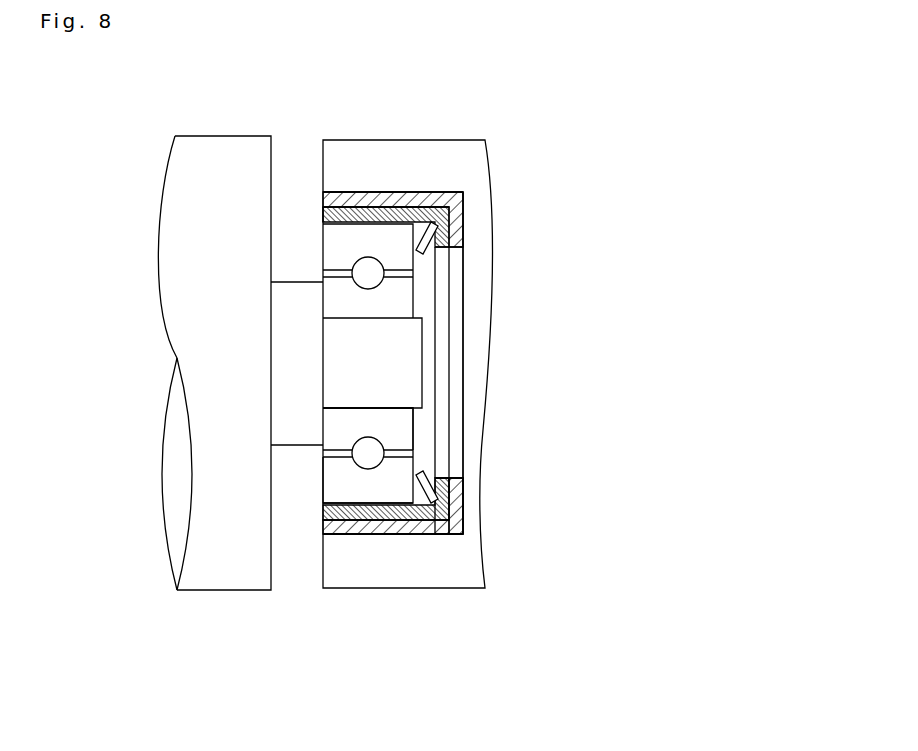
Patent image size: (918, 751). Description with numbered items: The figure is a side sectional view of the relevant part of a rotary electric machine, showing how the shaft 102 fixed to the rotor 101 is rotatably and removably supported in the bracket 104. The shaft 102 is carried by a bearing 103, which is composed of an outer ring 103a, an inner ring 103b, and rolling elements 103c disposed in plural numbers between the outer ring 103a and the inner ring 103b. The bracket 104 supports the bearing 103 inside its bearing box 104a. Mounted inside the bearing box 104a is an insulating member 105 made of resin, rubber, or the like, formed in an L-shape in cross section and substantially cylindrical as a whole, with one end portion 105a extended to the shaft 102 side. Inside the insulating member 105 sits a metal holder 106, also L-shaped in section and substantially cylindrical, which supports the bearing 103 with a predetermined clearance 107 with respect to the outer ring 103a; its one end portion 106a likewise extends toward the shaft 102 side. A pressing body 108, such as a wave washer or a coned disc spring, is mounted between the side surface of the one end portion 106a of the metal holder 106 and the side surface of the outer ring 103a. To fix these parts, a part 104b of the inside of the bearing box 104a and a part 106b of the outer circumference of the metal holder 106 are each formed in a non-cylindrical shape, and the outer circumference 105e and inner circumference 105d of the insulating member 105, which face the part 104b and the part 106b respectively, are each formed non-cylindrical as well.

The rotor 101 is at (205, 135).
The shaft 102 is at (383, 365).
The bearing 103 is at (323, 495).
The outer ring 103a is at (340, 478).
The inner ring 103b is at (337, 422).
The rolling elements 103c is at (363, 450).
The bracket 104 is at (448, 139).
The bearing box 104a is at (443, 193).
The part of the inside of the bearing box 104b is at (423, 195).
The insulating member 105 is at (392, 530).
The one end portion of the insulating member 105a is at (455, 502).
The inner circumference of the insulating member 105d is at (339, 201).
The outer circumference of the insulating member 105e is at (382, 195).
The metal holder 106 is at (342, 527).
The one end portion of the metal holder 106a is at (452, 484).
The part of the outer circumference of the metal holder 106b is at (344, 209).
The clearance 107 is at (324, 222).
The pressing body 108 is at (428, 482).